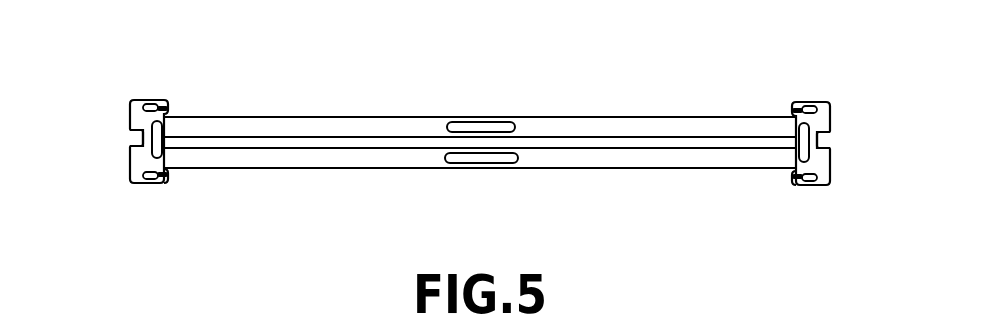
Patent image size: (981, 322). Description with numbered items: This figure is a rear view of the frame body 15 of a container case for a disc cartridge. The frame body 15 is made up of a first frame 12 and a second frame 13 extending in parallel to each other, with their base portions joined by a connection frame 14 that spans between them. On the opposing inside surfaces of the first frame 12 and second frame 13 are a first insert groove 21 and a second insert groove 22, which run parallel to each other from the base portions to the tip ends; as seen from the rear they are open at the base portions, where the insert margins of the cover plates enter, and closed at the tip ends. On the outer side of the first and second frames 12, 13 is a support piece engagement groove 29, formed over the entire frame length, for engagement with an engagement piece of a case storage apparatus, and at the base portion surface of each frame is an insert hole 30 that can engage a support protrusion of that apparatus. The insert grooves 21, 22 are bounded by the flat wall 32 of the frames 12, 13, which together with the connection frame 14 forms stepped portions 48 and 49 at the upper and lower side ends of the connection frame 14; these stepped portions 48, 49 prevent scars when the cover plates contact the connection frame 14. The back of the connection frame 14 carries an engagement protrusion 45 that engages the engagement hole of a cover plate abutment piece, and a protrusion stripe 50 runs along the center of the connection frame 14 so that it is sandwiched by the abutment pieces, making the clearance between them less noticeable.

The first frame 12 is at (131, 105).
The second frame 13 is at (830, 105).
The connection frame 14 is at (727, 158).
The frame body 15 is at (307, 158).
The first insert groove 21 is at (155, 101).
The second insert groove 22 is at (153, 178).
The support piece engagement groove 29 is at (137, 138).
The insert hole 30 is at (152, 153).
The flat wall 32 is at (162, 102).
The engagement protrusion 45 is at (503, 125).
The stepped portion 48 is at (170, 114).
The stepped portion 49 is at (167, 173).
The protrusion stripe 50 is at (612, 149).